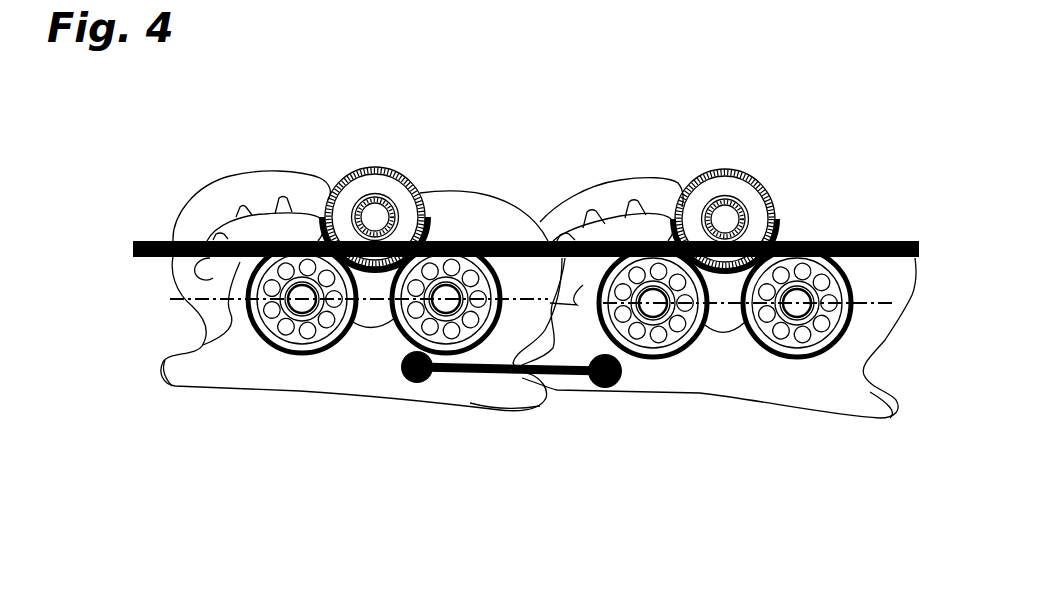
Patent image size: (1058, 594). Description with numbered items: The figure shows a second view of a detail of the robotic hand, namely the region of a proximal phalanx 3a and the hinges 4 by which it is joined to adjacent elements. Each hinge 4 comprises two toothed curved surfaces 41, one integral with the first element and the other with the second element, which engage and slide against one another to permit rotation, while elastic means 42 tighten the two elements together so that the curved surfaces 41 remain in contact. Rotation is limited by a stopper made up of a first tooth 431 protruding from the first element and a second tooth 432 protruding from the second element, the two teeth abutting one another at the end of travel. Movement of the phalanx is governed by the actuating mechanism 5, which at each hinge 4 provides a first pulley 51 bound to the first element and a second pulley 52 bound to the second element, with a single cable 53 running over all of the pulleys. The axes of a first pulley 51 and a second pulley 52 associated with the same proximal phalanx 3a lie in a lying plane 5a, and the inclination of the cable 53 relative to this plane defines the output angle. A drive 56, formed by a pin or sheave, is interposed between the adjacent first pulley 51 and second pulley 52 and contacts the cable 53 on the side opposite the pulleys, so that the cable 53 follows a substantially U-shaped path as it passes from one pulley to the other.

The hinge 4 is at (532, 292).
The actuating mechanism 5 is at (505, 261).
The lying plane 5a is at (180, 303).
The proximal phalanx 3a is at (272, 476).
The curved surface 41 is at (509, 194).
The elastic means 42 is at (248, 188).
The first tooth 431 is at (507, 410).
The second tooth 432 is at (180, 387).
The first pulley 51 is at (360, 318).
The second pulley 52 is at (300, 318).
The cable 53 is at (857, 243).
The drive 56 is at (367, 197).